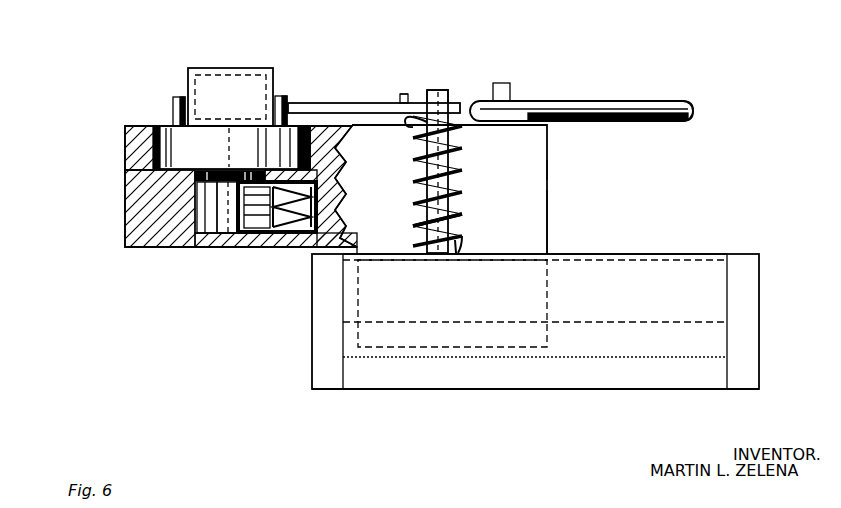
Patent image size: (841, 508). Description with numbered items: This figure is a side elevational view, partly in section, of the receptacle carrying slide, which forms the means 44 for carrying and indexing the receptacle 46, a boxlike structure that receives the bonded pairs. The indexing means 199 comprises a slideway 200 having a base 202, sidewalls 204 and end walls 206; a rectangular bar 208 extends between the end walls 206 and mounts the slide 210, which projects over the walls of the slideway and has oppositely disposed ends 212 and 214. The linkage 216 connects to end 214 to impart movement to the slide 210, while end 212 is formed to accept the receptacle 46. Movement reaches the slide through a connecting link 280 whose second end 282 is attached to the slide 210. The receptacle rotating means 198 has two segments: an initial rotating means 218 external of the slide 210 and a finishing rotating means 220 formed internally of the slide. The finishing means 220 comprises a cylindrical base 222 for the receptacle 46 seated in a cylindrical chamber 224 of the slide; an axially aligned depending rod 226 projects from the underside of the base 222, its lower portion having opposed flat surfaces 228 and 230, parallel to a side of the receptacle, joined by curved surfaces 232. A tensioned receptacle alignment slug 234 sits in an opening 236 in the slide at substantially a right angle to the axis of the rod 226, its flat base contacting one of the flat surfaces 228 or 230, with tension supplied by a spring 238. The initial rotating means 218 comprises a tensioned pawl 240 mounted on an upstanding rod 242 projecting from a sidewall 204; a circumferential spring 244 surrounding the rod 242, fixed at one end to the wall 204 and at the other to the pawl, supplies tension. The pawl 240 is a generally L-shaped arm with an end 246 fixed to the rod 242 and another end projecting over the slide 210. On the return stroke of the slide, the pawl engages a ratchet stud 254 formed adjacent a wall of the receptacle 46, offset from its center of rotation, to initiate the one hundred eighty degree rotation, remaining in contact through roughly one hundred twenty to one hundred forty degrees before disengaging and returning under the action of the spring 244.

The means for carrying and indexing receptacle 44 is at (620, 75).
The receptacle 46 is at (273, 79).
The receptacle rotating means 198 is at (405, 76).
The indexing means 199 is at (698, 158).
The slideway 200 is at (624, 226).
The base 202 is at (456, 383).
The sidewalls 204 is at (700, 254).
The end walls 206 is at (318, 315).
The rectangular bar 208 is at (632, 318).
The slide 210 is at (547, 170).
The end of slide 212 is at (137, 195).
The end of slide 214 is at (548, 203).
The linkage 216 is at (682, 93).
The initial rotating means 218 is at (474, 190).
The finishing rotating means 220 is at (213, 275).
The cylindrical base 222 is at (125, 147).
The cylindrical chamber 224 is at (133, 178).
The depending rod 226 is at (238, 182).
The flat surface 228 is at (235, 197).
The flat surface 230 is at (198, 233).
The curved surfaces 232 is at (227, 248).
The receptacle alignment slug 234 is at (320, 172).
The opening 236 is at (316, 195).
The spring 238 is at (316, 225).
The pawl 240 is at (376, 103).
The upstanding rod 242 is at (462, 143).
The circumferential spring 244 is at (462, 212).
The end of pawl 246 is at (455, 100).
The ratchet stud 254 is at (173, 105).
The connecting link 280 is at (622, 102).
The second end of connecting link 282 is at (518, 101).